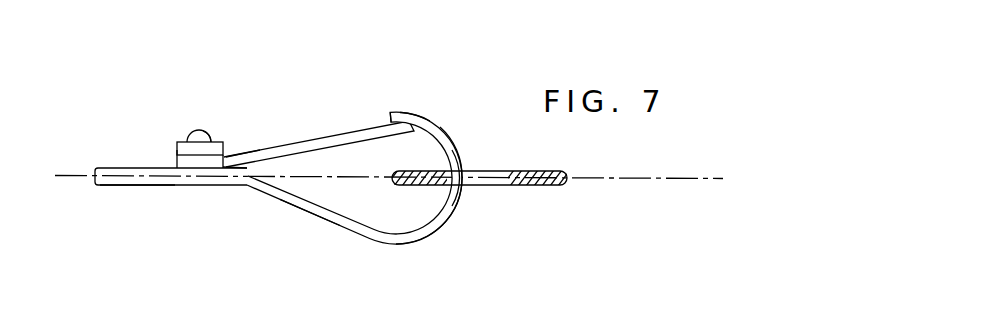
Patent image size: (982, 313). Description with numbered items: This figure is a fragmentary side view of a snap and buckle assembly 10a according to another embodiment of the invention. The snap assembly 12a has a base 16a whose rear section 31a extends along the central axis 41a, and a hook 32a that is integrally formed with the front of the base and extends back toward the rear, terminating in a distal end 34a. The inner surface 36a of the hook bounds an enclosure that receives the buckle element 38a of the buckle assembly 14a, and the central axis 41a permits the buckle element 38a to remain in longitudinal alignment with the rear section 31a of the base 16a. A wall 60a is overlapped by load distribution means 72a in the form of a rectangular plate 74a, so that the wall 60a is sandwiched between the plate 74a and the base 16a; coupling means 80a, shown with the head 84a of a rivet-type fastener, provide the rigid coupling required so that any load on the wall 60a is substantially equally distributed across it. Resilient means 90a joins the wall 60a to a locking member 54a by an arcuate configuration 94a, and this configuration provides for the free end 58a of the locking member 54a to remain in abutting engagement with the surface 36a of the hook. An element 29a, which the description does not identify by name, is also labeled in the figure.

The snap and buckle assembly 10a is at (463, 123).
The snap assembly 12a is at (406, 102).
The buckle assembly 14a is at (553, 192).
The base 16a is at (100, 168).
The lower leg of hook 29a is at (322, 212).
The rear section 31a is at (127, 184).
The hook 32a is at (462, 165).
The distal end 34a is at (389, 112).
The inner surface 36a is at (447, 156).
The buckle element 38a is at (430, 187).
The central axis 41a is at (674, 178).
The locking member 54a is at (332, 135).
The free end 58a is at (416, 128).
The wall 60a is at (192, 162).
The load distribution means 72a is at (173, 138).
The rectangular plate 74a is at (177, 154).
The coupling means 80a is at (194, 125).
The head 84a is at (212, 128).
The resilient means 90a is at (241, 144).
The arcuate configuration 94a is at (225, 163).